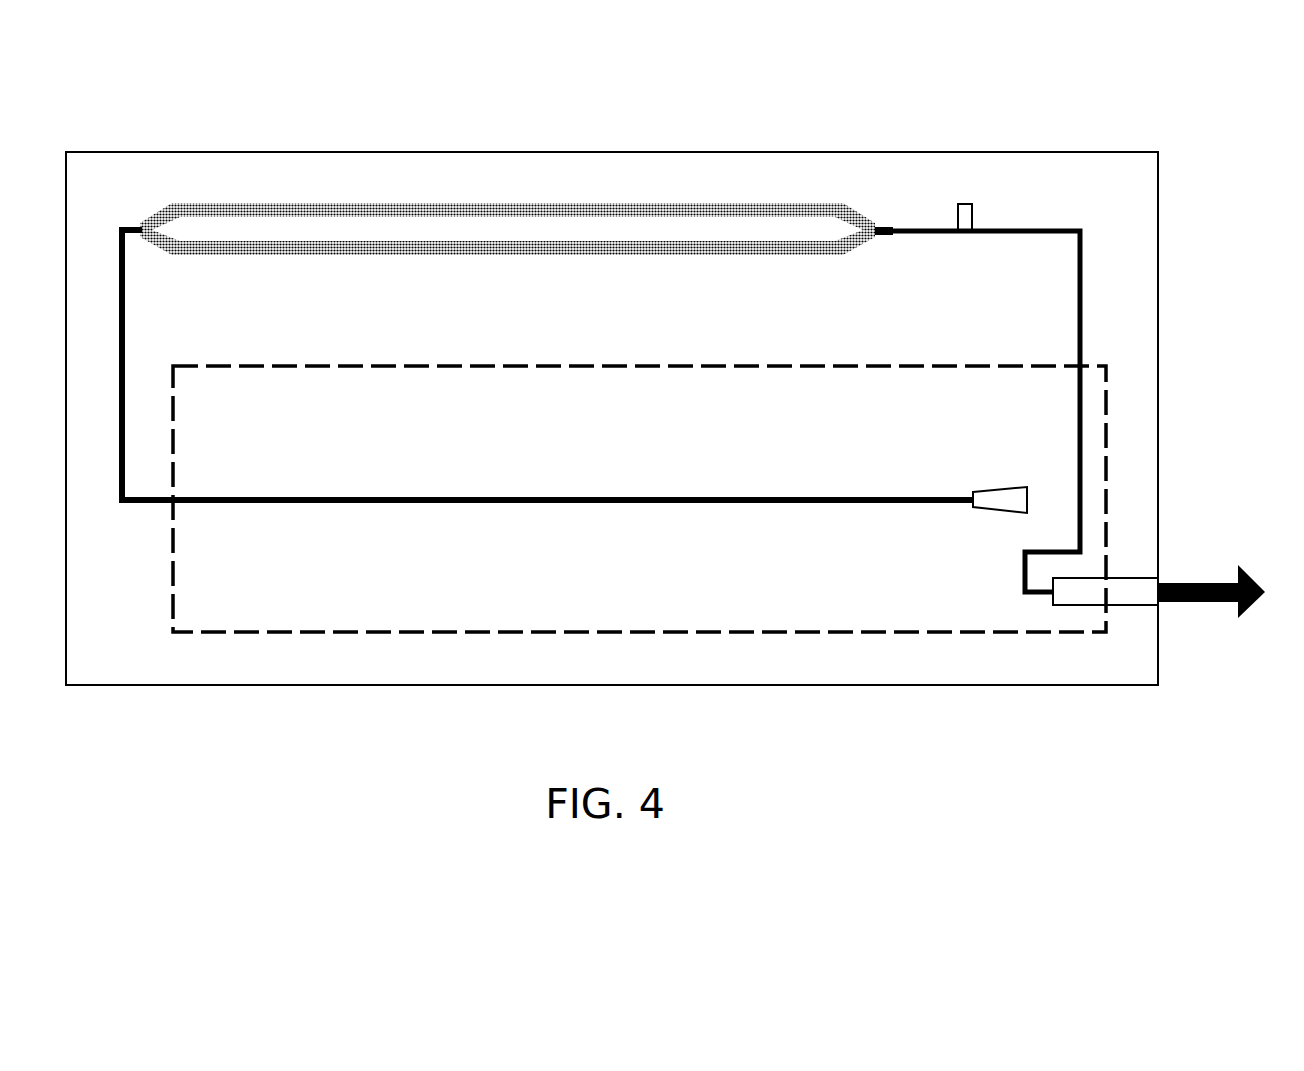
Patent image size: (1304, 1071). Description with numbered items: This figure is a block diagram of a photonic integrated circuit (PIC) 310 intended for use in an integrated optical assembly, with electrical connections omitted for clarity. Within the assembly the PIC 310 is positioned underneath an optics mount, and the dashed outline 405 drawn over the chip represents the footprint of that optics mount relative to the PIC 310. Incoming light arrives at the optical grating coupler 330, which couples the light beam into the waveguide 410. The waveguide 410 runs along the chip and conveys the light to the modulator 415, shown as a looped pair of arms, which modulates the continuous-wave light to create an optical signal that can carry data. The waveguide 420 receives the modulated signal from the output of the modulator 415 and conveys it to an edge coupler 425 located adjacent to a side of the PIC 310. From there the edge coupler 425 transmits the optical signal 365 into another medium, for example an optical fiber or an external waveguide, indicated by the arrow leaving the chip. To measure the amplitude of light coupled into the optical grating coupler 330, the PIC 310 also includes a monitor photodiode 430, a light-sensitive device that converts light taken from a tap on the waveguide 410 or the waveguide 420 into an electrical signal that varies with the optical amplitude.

The photonic integrated circuit 310 is at (106, 202).
The outline 405 is at (214, 444).
The waveguide 410 is at (845, 497).
The modulator 415 is at (347, 203).
The waveguide 420 is at (1052, 229).
The monitor photodiode 430 is at (963, 203).
The optical grating coupler 330 is at (1000, 488).
The edge coupler 425 is at (1137, 606).
The optical signal 365 is at (1212, 606).